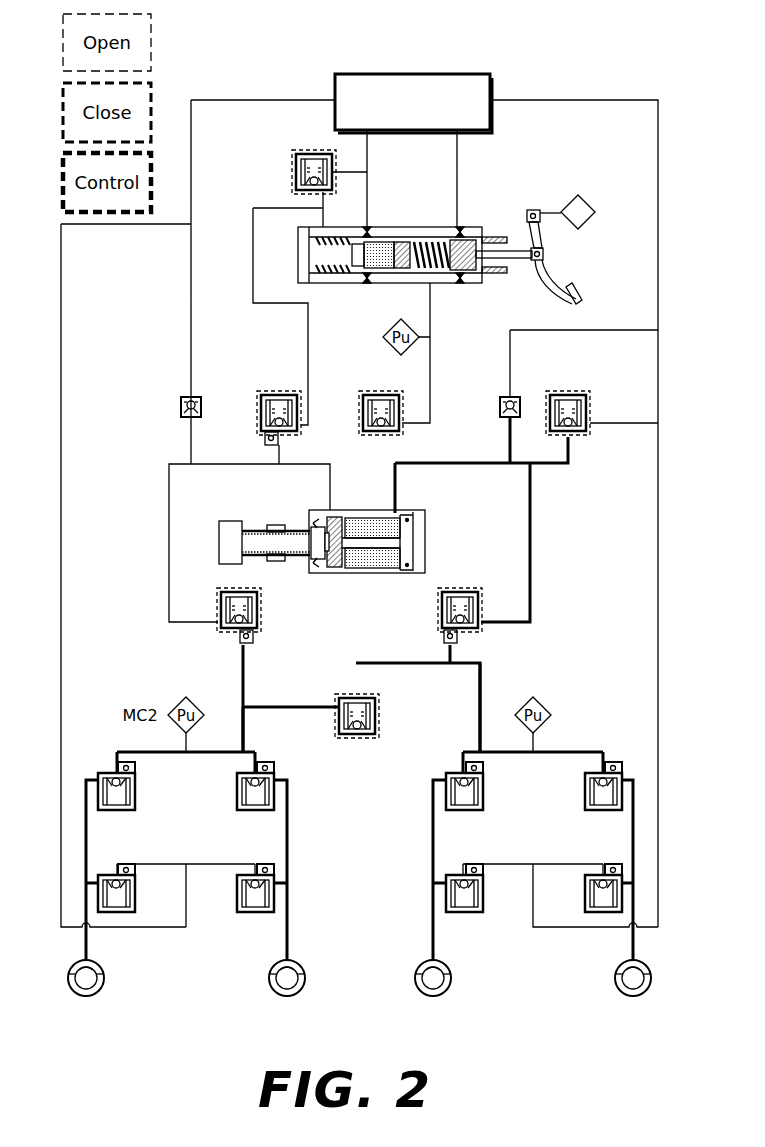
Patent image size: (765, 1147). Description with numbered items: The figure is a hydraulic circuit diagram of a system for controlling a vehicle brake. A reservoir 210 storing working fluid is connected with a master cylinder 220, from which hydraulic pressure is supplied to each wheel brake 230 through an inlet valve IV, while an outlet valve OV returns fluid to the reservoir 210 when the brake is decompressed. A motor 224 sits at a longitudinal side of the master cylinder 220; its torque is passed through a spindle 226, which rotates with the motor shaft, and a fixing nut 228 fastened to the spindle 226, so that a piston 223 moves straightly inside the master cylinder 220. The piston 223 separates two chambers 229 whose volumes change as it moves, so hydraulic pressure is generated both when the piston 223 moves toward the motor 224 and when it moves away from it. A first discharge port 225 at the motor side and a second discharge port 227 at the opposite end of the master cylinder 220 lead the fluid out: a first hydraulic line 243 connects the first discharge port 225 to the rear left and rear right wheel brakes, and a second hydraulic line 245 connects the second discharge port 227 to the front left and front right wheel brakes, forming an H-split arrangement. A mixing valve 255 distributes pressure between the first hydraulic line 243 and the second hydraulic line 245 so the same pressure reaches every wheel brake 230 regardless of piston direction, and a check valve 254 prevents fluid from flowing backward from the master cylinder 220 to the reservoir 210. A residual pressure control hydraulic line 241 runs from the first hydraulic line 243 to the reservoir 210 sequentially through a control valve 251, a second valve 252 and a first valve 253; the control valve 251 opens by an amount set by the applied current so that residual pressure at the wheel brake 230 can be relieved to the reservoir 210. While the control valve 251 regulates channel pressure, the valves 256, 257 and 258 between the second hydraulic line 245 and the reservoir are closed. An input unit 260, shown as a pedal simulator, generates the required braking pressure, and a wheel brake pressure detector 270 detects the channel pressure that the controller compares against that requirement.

The reservoir 210 is at (438, 72).
The master cylinder 220 is at (378, 552).
The piston 223 is at (338, 516).
The motor 224 is at (221, 520).
The first discharge port 225 is at (325, 513).
The spindle 226 is at (258, 554).
The second discharge port 227 is at (401, 511).
The fixing nut 228 is at (268, 525).
The chambers 229 is at (362, 573).
The wheel brake 230 is at (272, 958).
The residual pressure control hydraulic line 241 is at (168, 543).
The first hydraulic line 243 is at (244, 722).
The second hydraulic line 245 is at (477, 706).
The control valve 251 is at (217, 626).
The second valve 252 is at (276, 392).
The first valve 253 is at (294, 168).
The check valve 254 is at (503, 396).
The mixing valve 255 is at (358, 738).
The valve 256 is at (482, 624).
The valve 257 is at (571, 393).
The valve 258 is at (398, 430).
The input unit 260 is at (389, 226).
The wheel brake pressure detector 270 is at (546, 702).